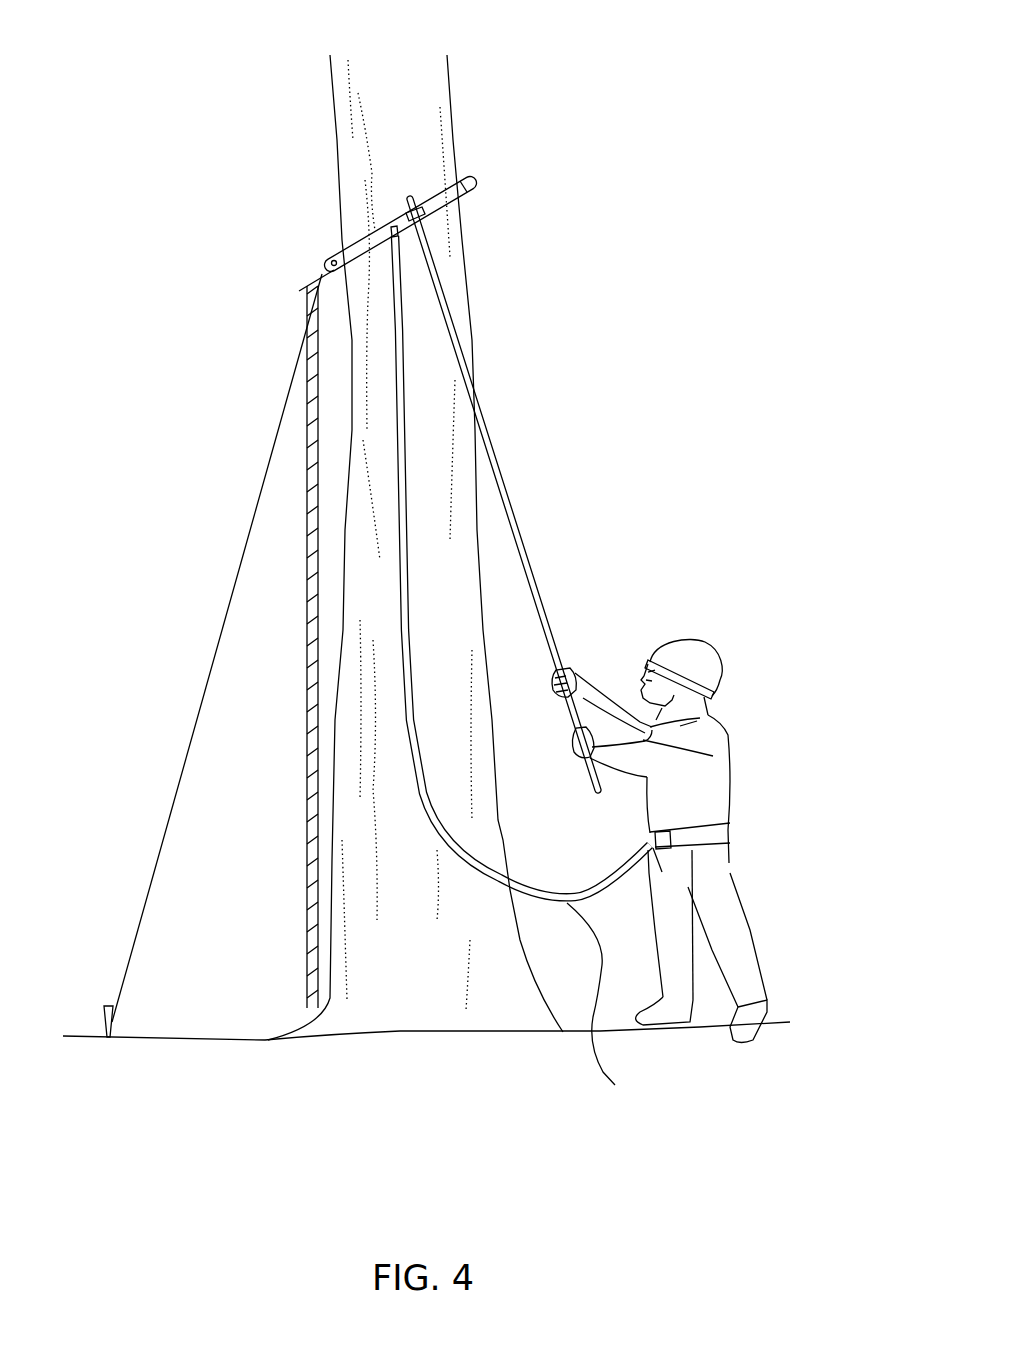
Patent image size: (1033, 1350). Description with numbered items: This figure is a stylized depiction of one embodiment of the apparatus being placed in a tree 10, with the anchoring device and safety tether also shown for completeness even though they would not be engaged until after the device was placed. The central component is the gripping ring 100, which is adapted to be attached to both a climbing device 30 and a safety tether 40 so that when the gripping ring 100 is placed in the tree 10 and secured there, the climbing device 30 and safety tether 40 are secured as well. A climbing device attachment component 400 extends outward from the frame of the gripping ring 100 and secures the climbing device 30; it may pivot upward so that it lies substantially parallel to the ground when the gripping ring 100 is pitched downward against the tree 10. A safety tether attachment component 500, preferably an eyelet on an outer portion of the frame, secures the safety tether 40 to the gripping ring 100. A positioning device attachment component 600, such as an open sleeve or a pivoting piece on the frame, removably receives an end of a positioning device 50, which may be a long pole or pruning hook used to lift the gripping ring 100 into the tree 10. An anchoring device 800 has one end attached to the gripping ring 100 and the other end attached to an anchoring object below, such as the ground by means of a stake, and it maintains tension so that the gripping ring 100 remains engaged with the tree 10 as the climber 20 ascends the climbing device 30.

The tree 10 is at (423, 110).
The climber 20 is at (723, 725).
The climbing device 30 is at (307, 318).
The safety tether 40 is at (603, 1009).
The positioning device 50 is at (505, 479).
The gripping ring 100 is at (477, 182).
The climbing device attachment component 400 is at (318, 272).
The safety tether attachment component 500 is at (345, 226).
The positioning device attachment component 600 is at (440, 212).
The anchoring device 800 is at (227, 632).